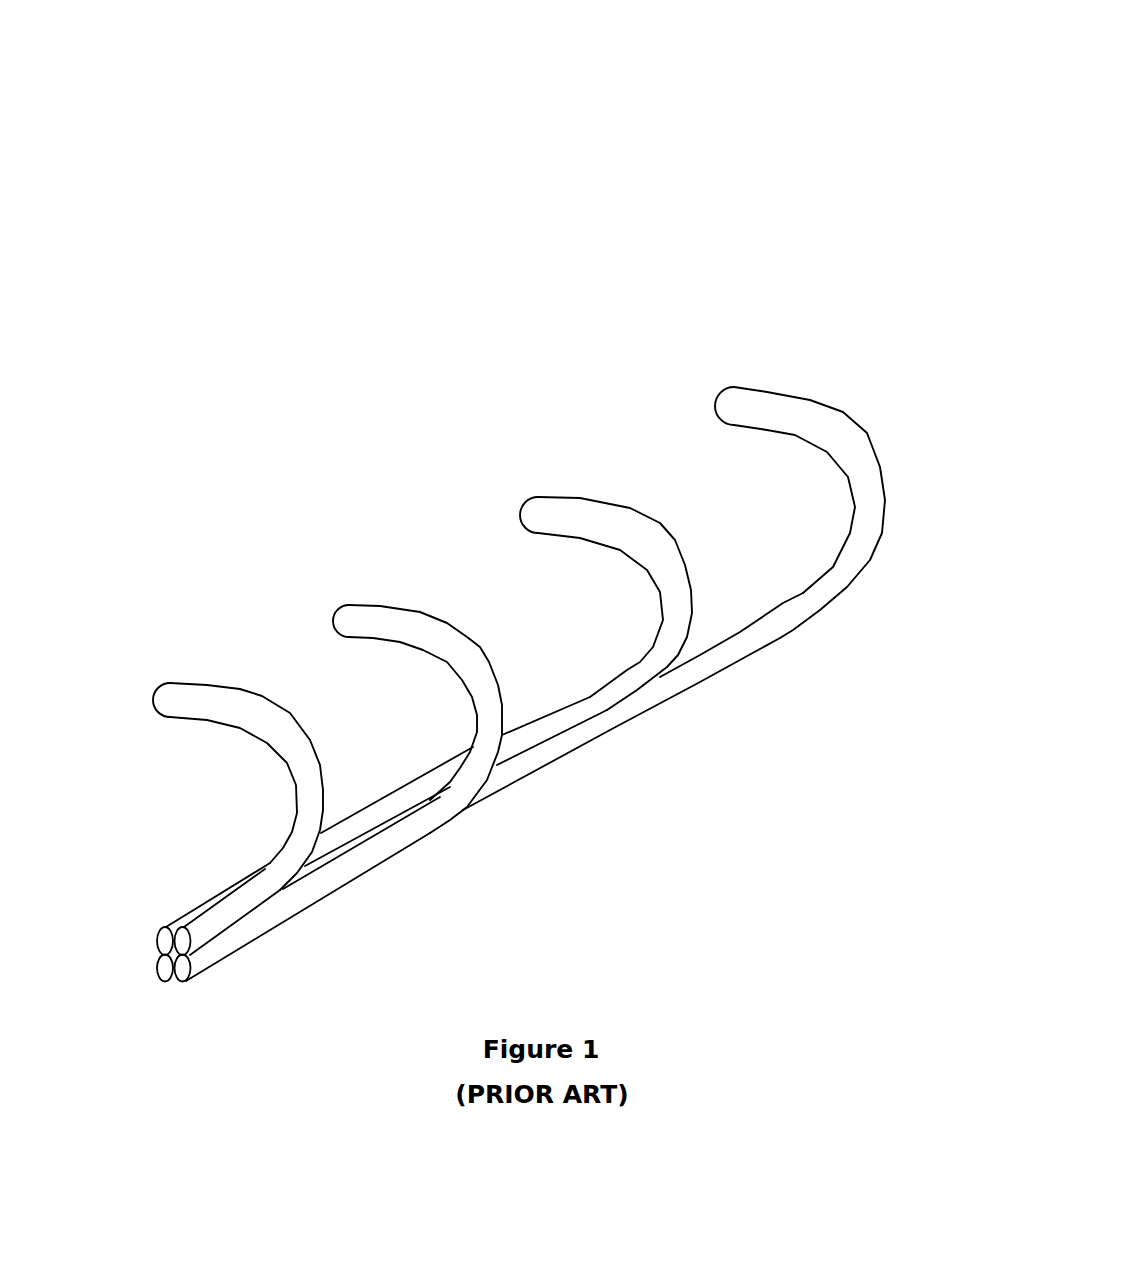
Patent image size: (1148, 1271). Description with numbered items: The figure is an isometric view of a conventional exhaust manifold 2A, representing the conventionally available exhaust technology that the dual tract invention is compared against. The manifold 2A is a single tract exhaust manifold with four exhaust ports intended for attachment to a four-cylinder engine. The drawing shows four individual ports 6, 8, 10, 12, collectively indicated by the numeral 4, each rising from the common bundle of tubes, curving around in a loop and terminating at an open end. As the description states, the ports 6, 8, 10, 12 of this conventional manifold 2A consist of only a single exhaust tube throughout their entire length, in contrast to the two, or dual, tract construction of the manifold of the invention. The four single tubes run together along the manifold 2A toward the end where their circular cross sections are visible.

The conventional exhaust manifold 2A is at (668, 232).
The loops 4 is at (413, 341).
The port 6 is at (413, 341).
The port 8 is at (413, 341).
The port 10 is at (413, 341).
The port 12 is at (413, 341).